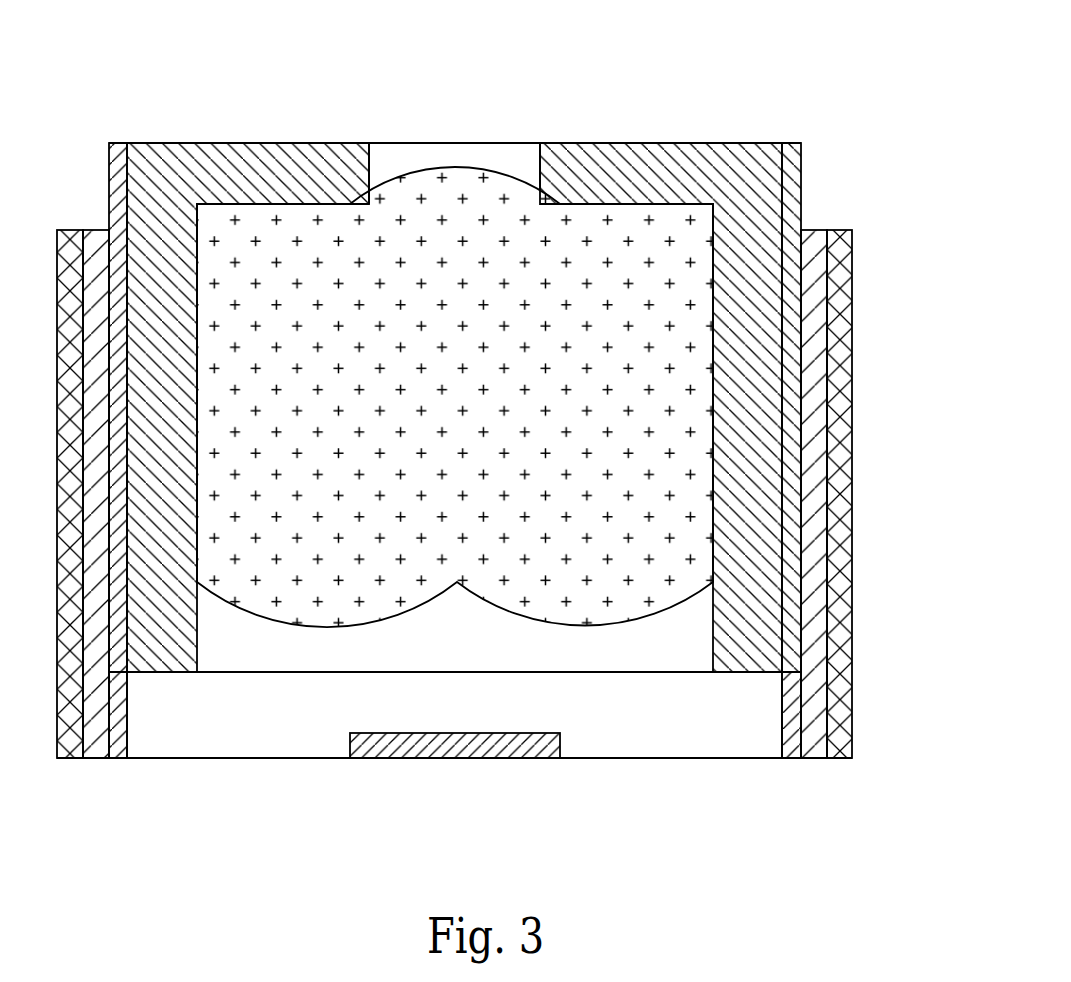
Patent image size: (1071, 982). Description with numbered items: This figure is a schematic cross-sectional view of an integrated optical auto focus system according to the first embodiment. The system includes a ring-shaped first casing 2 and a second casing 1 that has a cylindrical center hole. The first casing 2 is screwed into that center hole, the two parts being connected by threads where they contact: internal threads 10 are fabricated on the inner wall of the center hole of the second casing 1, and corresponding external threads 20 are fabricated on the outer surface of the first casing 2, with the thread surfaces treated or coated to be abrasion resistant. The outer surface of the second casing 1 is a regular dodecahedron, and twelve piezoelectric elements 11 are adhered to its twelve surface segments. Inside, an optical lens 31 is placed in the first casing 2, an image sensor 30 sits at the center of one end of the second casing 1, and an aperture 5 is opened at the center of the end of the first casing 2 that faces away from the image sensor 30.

The second casing 1 is at (454, 757).
The first casing 2 is at (661, 345).
The aperture 5 is at (454, 111).
The internal threads 10 is at (173, 495).
The piezoelectric elements 11 is at (869, 494).
The external threads 20 is at (842, 394).
The image sensor 30 is at (455, 790).
The optical lens 31 is at (455, 323).